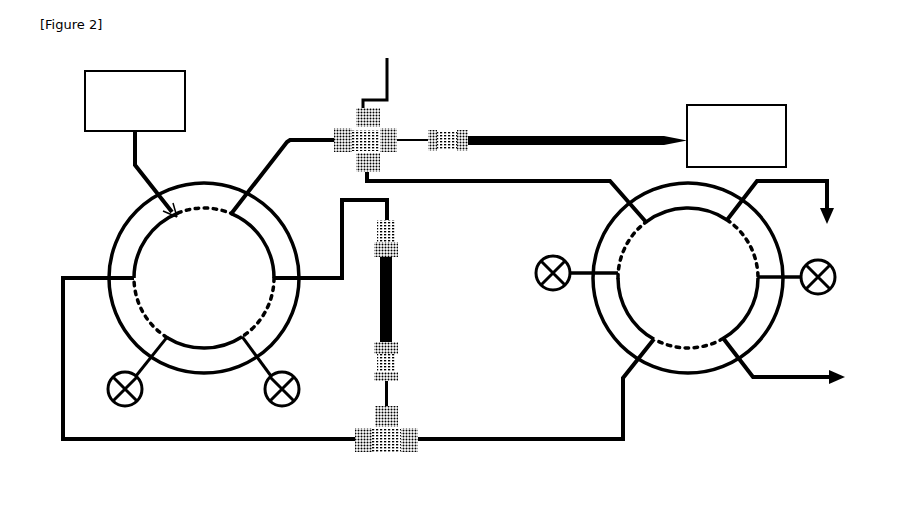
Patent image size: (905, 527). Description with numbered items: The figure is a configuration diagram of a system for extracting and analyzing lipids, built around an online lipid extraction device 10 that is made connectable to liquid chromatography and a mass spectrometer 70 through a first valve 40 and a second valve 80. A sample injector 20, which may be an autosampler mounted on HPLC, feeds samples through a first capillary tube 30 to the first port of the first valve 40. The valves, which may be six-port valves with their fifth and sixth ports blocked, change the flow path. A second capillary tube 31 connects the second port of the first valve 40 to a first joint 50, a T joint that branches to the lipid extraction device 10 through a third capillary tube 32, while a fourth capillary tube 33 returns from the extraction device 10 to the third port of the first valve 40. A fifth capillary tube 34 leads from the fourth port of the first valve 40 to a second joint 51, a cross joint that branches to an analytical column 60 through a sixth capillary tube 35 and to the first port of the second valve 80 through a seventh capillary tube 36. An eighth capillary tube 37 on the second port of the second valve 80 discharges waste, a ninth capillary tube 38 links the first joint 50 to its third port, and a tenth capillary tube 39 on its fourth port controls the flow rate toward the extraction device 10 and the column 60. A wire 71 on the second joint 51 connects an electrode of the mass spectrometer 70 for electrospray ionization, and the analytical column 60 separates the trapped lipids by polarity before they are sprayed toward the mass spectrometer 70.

The lipid extraction device 10 is at (393, 298).
The sample injector 20 is at (85, 100).
The first capillary tube 30 is at (135, 150).
The second capillary tube 31 is at (208, 442).
The third capillary tube 32 is at (390, 393).
The fourth capillary tube 33 is at (325, 281).
The fifth capillary tube 34 is at (276, 156).
The sixth capillary tube 35 is at (416, 137).
The seventh capillary tube 36 is at (477, 183).
The eighth capillary tube 37 is at (807, 181).
The ninth capillary tube 38 is at (510, 442).
The tenth capillary tube 39 is at (792, 381).
The first valve 40 is at (125, 222).
The first joint 50 is at (387, 452).
The second joint 51 is at (343, 127).
The analytical column 60 is at (563, 135).
The mass spectrometer 70 is at (733, 105).
The wire 71 is at (379, 75).
The second valve 80 is at (690, 374).